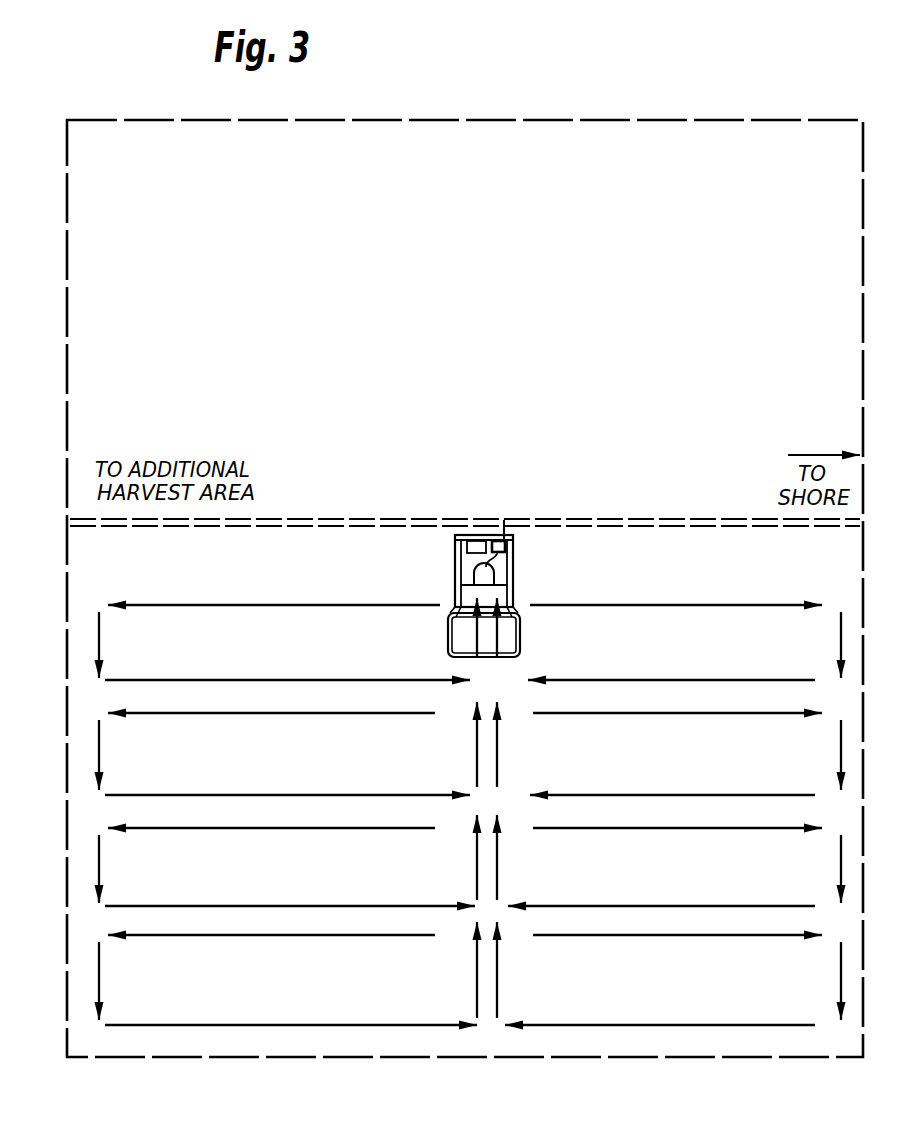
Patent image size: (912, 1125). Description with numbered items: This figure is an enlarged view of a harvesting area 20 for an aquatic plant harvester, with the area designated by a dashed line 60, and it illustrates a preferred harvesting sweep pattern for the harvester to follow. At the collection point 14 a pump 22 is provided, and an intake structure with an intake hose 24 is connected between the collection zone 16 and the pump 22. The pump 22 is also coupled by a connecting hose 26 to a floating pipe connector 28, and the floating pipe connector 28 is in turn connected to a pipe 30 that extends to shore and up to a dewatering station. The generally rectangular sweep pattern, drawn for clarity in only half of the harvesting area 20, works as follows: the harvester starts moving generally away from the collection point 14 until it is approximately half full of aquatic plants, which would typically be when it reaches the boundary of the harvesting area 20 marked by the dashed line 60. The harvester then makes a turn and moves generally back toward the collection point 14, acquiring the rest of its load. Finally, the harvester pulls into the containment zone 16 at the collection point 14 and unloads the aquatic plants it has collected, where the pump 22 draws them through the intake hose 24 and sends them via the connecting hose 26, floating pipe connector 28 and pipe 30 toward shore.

The collection point 14 is at (514, 558).
The collection zone 16 is at (508, 613).
The harvesting area 20 is at (653, 373).
The pump 22 is at (465, 545).
The intake hose 24 is at (477, 567).
The connecting hose 26 is at (509, 540).
The floating pipe connector 28 is at (505, 534).
The pipe 30 is at (651, 521).
The dashed line 60 is at (575, 122).